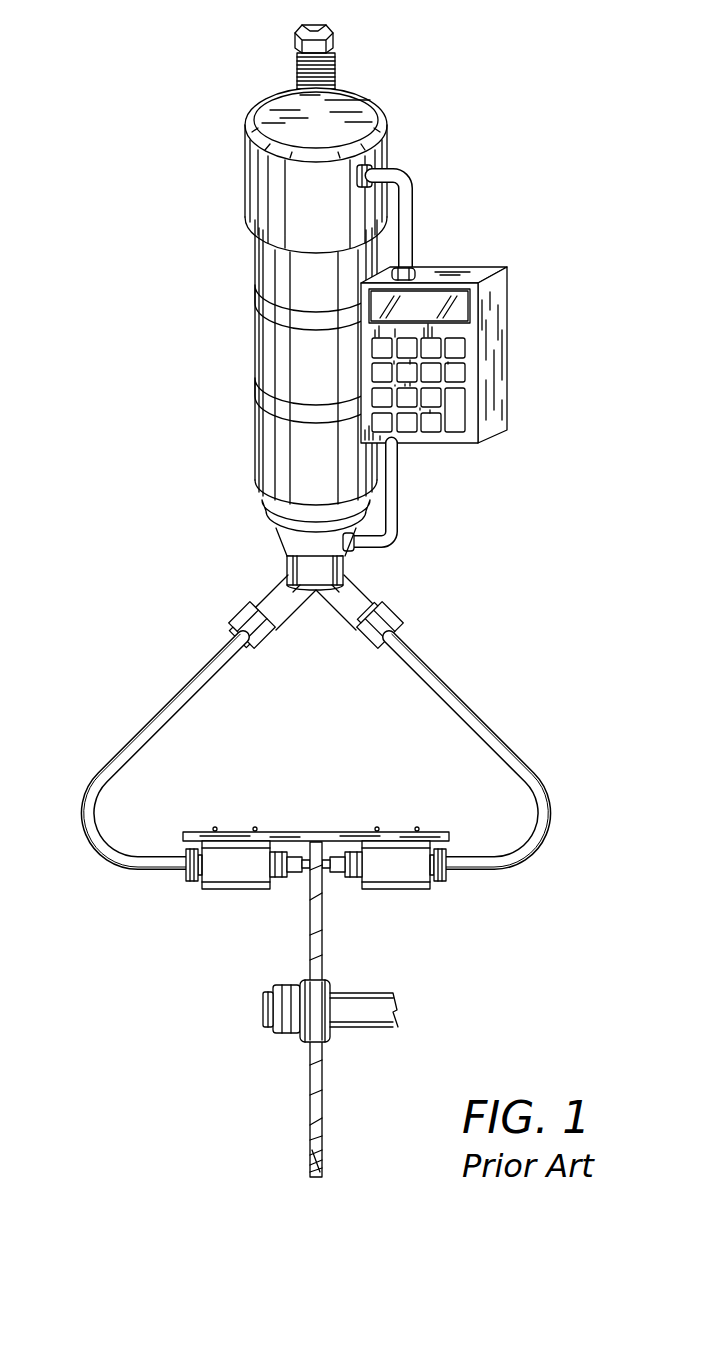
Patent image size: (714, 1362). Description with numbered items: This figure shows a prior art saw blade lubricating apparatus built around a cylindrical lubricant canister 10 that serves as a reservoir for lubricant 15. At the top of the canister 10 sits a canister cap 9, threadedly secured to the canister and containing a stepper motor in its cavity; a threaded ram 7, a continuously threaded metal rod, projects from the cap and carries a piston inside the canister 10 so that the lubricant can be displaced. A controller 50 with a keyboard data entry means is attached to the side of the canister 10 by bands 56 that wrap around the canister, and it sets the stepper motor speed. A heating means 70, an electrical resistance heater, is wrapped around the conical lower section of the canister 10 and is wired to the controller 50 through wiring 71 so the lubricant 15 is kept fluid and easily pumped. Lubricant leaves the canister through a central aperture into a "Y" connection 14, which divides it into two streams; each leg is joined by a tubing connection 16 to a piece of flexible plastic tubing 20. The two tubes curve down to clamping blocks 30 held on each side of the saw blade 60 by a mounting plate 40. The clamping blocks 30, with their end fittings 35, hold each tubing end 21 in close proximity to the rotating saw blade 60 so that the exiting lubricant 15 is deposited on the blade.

The threaded ram 7 is at (340, 68).
The canister cap 9 is at (390, 150).
The lubricant canister 10 is at (183, 348).
The bands 56 is at (250, 280).
The controller 50 is at (512, 327).
The wiring 71 is at (405, 479).
The heating means 70 is at (267, 530).
The "Y" connection 14 is at (268, 582).
The tubing connection 16 is at (243, 612).
The tubing 20 is at (143, 718).
The mounting plate 40 is at (300, 828).
The end of tubing 21 is at (352, 848).
The end nuts 35 is at (183, 880).
The clamping blocks 30 is at (230, 893).
The lubricant 15 is at (325, 873).
The saw blade 60 is at (308, 1085).